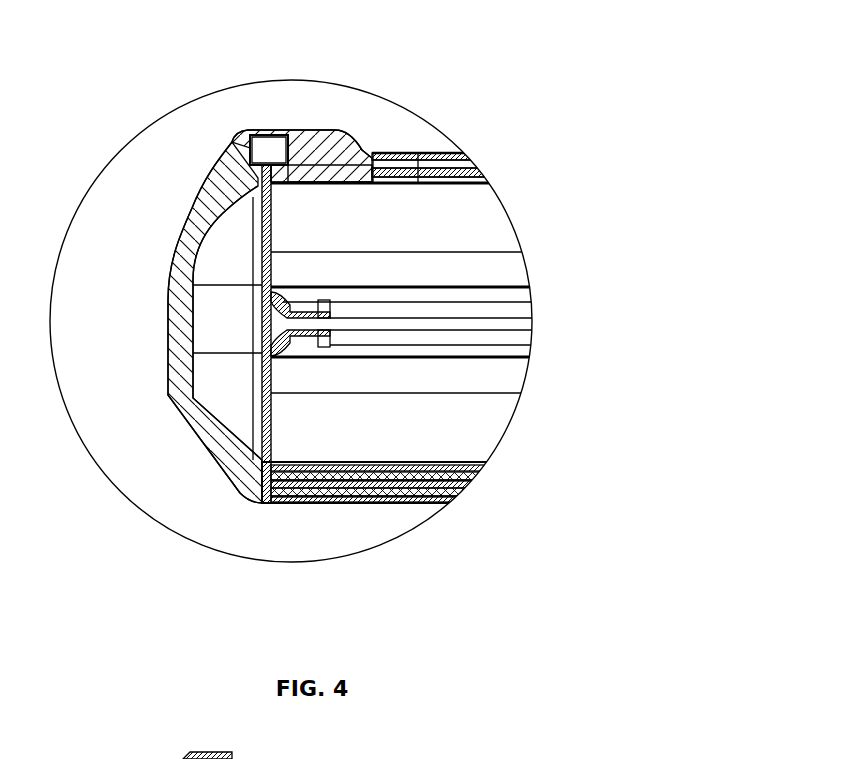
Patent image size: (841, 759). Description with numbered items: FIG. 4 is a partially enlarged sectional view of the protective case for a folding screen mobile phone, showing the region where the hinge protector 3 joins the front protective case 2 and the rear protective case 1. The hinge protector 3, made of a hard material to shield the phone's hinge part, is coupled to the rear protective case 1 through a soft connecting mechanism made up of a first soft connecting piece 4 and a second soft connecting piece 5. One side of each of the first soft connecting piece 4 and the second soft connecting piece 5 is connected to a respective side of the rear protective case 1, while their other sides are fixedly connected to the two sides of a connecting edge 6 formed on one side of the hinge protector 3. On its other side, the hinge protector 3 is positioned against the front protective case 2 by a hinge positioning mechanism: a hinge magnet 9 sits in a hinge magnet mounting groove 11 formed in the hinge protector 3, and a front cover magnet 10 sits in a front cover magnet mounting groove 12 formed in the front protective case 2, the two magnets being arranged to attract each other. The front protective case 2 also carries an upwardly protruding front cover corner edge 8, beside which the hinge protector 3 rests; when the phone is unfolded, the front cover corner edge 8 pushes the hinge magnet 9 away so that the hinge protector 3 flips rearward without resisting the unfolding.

The rear protective case 1 is at (451, 490).
The front protective case 2 is at (395, 153).
The hinge protector 3 is at (200, 418).
The first soft connecting piece 4 is at (398, 479).
The second soft connecting piece 5 is at (349, 494).
The connecting edge 6 is at (283, 487).
The front cover corner edge 8 is at (328, 133).
The hinge magnet 9 is at (250, 148).
The front cover magnet 10 is at (285, 146).
The hinge magnet mounting groove 11 is at (254, 133).
The front cover magnet mounting groove 12 is at (277, 133).